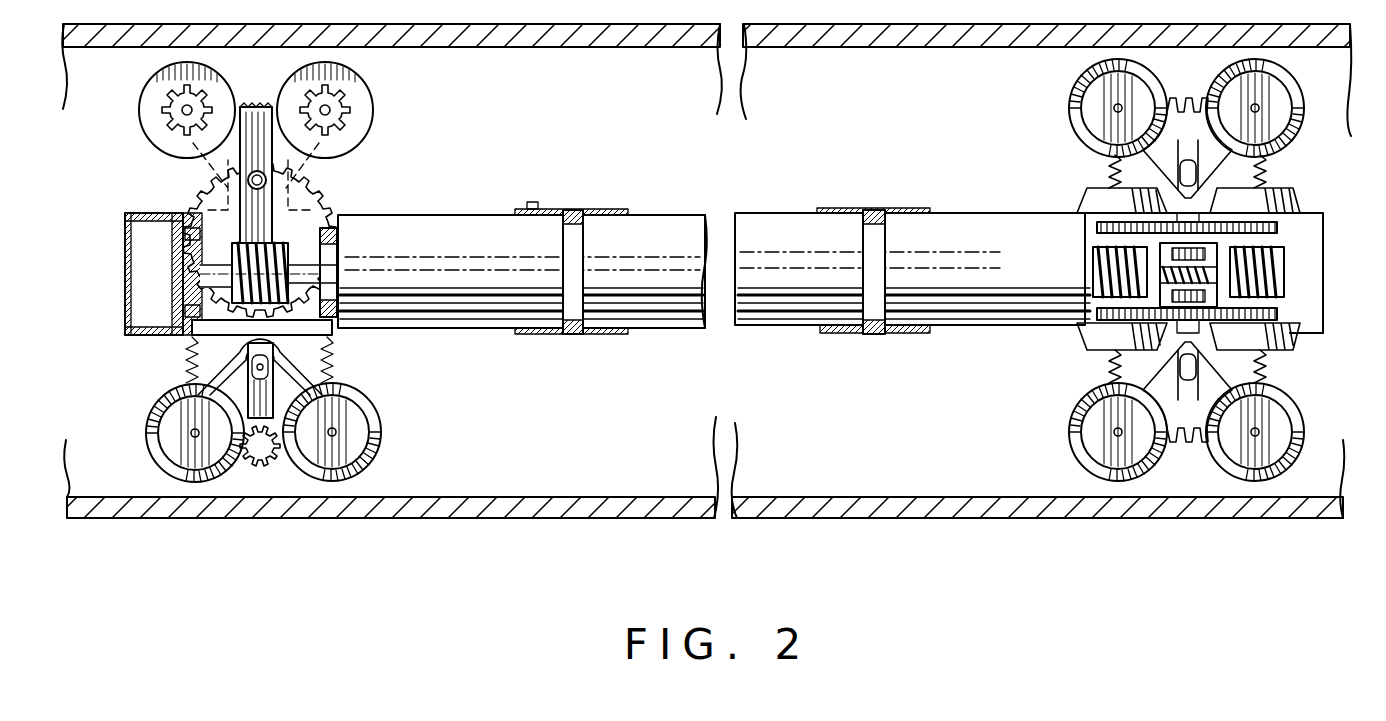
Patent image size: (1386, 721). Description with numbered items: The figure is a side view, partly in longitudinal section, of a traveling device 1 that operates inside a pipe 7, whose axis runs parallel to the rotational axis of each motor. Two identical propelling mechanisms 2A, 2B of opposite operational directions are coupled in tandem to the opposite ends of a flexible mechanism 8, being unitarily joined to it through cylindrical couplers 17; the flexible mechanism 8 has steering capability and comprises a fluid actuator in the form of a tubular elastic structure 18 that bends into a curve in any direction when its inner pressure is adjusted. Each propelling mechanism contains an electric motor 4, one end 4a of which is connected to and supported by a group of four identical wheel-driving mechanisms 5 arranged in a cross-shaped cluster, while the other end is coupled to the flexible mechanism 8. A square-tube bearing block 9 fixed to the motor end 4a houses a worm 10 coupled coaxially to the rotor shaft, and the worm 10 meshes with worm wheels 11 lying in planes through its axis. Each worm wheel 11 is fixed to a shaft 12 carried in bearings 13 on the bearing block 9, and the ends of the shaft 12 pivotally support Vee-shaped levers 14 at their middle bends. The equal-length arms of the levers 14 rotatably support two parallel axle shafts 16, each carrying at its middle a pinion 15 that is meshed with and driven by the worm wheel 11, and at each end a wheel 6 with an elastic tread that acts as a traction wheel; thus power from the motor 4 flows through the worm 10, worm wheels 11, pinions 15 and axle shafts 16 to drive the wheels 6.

The traveling device 1 is at (770, 212).
The propelling mechanism 2A is at (262, 516).
The propelling mechanism 2B is at (1188, 518).
The electric motor 4 is at (432, 215).
The one end of the motor 4a is at (340, 260).
The wheel-driving mechanism 5 is at (131, 162).
The wheel 6 is at (153, 95).
The pipe 7 is at (550, 519).
The flexible mechanism 8 is at (672, 334).
The bearing block 9 is at (335, 215).
The worm 10 is at (180, 298).
The worm wheel 11 is at (190, 205).
The shaft 12 is at (283, 183).
The bearing 13 is at (205, 180).
The Vee-shaped lever 14 is at (260, 107).
The pinion 15 is at (170, 110).
The axle shaft 16 is at (180, 112).
The cylindrical coupler 17 is at (573, 336).
The tubular elastic structure 18 is at (788, 335).